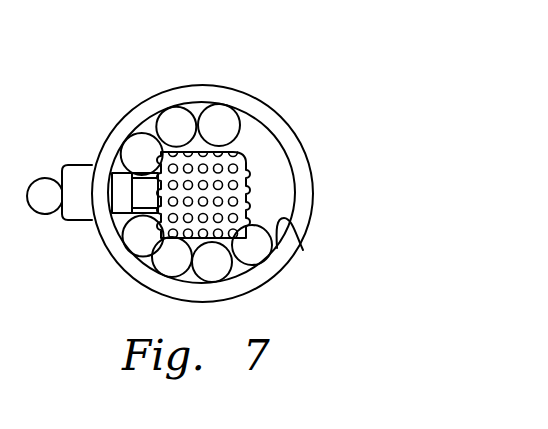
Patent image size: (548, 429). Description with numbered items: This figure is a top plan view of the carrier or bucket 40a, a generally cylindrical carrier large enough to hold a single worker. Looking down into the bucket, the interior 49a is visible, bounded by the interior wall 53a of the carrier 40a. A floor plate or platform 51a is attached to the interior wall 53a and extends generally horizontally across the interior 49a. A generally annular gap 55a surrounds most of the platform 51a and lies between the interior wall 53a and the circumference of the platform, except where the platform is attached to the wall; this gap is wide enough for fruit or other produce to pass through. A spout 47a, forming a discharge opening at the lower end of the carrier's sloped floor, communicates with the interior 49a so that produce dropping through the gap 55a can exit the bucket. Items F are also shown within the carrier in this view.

The carrier or bucket 40a is at (192, 84).
The spout 47a is at (82, 165).
The interior 49a is at (262, 153).
The floor plate or platform 51a is at (247, 197).
The interior wall 53a is at (303, 250).
The annular gap 55a is at (245, 134).
The fibers F is at (207, 262).